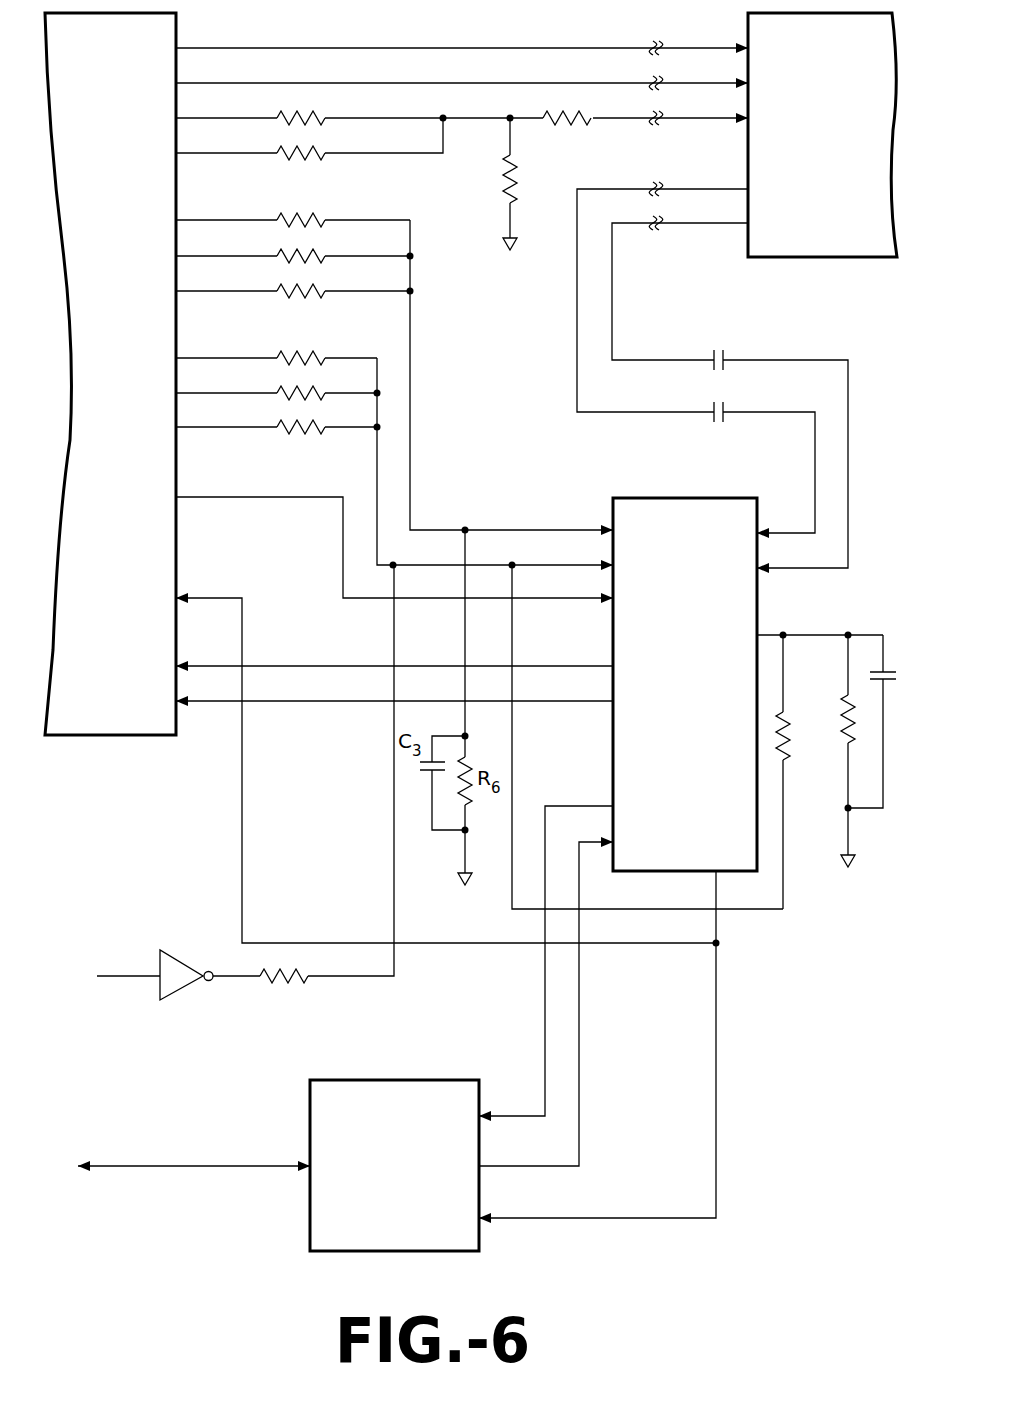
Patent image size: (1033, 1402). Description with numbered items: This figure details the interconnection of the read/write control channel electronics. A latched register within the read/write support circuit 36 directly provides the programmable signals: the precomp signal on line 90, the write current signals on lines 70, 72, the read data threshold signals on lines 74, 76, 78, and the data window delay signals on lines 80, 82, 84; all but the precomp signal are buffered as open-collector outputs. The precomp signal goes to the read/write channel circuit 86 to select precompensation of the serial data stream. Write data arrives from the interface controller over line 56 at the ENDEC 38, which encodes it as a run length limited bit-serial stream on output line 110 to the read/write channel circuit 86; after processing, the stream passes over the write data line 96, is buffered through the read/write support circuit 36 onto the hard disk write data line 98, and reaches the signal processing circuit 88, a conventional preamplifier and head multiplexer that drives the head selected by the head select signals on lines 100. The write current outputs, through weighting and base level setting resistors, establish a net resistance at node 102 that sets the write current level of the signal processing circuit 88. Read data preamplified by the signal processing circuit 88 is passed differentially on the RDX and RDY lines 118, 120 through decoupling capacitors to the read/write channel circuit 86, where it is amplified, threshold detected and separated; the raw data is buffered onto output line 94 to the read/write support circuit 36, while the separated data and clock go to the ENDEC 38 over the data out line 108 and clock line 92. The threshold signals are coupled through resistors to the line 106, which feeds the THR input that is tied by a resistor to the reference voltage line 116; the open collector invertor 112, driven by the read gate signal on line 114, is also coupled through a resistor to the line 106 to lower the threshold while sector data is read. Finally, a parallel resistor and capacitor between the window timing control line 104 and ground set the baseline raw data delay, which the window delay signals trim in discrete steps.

The read/write support circuit 36 is at (95, 737).
The ENDEC 38 is at (382, 1252).
The line 56 is at (258, 1168).
The write current line 70 is at (198, 120).
The write current line 72 is at (198, 157).
The read data threshold line 74 is at (200, 222).
The read data threshold line 76 is at (202, 258).
The read data threshold line 78 is at (202, 293).
The data window delay line 80 is at (202, 360).
The data window delay line 82 is at (202, 395).
The data window delay line 84 is at (208, 430).
The read/write channel circuit 86 is at (719, 782).
The signal processing circuit 88 is at (850, 262).
The precomp line 90 is at (222, 497).
The clock line 92 is at (242, 620).
The output line 94 is at (288, 667).
The write data line 96 is at (287, 702).
The hard disk write data line 98 is at (207, 48).
The head select lines 100 is at (208, 83).
The write current node 102 is at (483, 122).
The window timing control line 104 is at (412, 354).
The line 106 is at (377, 468).
The data out line 108 is at (518, 1115).
The output line 110 is at (498, 1168).
The open collector invertor 112 is at (183, 988).
The line 114 is at (138, 978).
The reference voltage line 116 is at (770, 634).
The RDX line 118 is at (815, 485).
The RDY line 120 is at (848, 396).